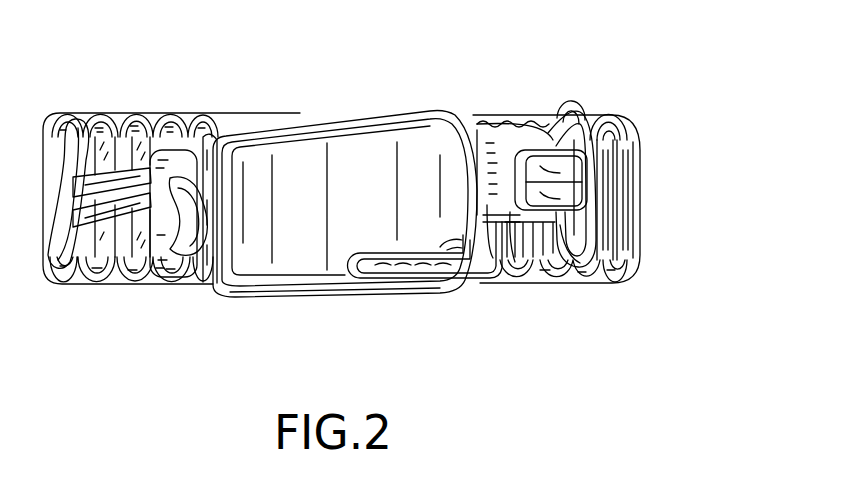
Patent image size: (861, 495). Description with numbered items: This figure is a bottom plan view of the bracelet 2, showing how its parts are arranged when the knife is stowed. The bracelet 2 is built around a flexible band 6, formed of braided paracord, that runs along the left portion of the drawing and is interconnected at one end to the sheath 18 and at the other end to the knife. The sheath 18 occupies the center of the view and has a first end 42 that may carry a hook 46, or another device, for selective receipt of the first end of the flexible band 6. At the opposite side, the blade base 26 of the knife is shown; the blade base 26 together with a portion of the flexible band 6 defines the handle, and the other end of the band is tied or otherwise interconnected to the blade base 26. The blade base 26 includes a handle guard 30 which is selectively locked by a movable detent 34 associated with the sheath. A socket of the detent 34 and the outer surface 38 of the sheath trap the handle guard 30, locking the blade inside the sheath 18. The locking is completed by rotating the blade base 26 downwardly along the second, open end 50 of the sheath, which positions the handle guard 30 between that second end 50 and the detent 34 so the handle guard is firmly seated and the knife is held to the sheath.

The bracelet 2 is at (668, 104).
The flexible band 6 is at (113, 128).
The sheath 18 is at (353, 155).
The blade base 26 is at (498, 155).
The handle guard 30 is at (482, 207).
The detent 34 is at (527, 280).
The outer surface of the sheath 38 is at (506, 240).
The first end of the sheath 42 is at (214, 255).
The hook 46 is at (170, 270).
The second open end of the sheath 50 is at (460, 205).